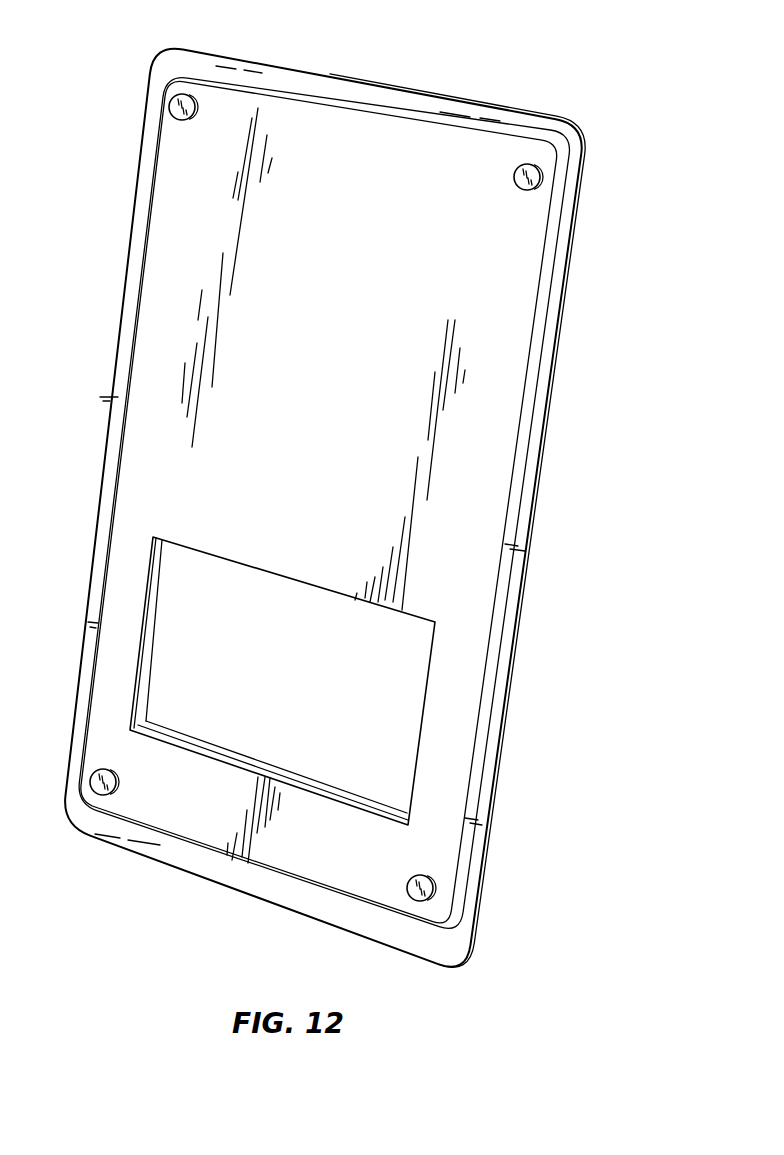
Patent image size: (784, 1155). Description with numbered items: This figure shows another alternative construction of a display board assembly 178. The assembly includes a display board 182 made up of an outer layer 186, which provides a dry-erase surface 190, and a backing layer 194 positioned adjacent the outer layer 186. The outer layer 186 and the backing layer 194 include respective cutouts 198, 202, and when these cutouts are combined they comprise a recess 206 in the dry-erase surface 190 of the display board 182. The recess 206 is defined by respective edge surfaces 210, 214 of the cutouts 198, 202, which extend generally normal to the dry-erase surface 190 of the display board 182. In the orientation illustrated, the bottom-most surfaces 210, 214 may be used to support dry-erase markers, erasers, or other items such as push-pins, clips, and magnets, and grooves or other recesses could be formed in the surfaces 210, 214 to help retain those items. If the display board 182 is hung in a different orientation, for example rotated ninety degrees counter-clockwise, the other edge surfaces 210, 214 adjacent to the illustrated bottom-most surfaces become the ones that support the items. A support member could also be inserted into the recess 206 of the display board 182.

The display board assembly 178 is at (490, 83).
The display board 182 is at (528, 590).
The outer layer 186 is at (125, 551).
The dry-erase surface 190 is at (356, 409).
The backing layer 194 is at (110, 443).
The cutout 198 is at (146, 600).
The cutout 202 is at (160, 612).
The recess 206 is at (208, 567).
The edge surface 210 is at (133, 713).
The edge surface 214 is at (147, 651).